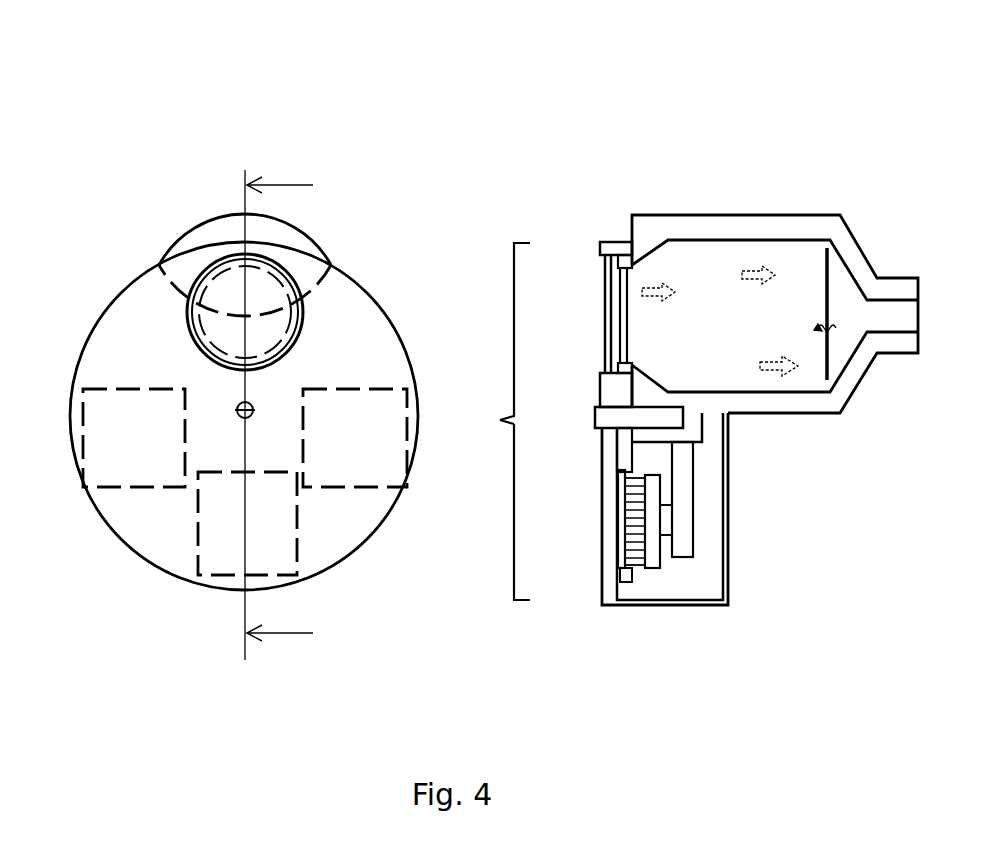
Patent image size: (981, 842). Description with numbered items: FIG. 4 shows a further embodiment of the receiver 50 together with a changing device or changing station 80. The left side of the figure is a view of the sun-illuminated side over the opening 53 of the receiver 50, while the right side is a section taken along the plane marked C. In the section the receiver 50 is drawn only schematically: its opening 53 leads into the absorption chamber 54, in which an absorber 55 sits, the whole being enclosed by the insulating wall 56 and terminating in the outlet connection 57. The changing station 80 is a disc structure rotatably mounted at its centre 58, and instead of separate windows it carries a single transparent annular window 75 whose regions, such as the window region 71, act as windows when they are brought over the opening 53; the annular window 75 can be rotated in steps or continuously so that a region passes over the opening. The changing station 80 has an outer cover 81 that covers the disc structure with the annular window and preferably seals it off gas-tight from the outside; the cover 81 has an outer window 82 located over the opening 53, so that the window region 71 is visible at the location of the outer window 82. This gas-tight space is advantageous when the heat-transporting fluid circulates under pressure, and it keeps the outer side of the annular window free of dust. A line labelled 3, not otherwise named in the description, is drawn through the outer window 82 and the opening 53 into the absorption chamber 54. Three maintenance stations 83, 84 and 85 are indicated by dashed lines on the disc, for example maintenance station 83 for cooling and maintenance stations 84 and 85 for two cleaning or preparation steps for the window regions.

The axis 3 is at (561, 318).
The receiver 50 is at (192, 198).
The opening 53 is at (303, 332).
The absorption chamber 54 is at (527, 322).
The absorber 55 is at (830, 342).
The insulating wall 56 is at (733, 213).
The outlet connection 57 is at (903, 277).
The centre 58 is at (597, 421).
The window region 71 is at (285, 296).
The transparent annular window 75 is at (620, 320).
The changing station 80 is at (65, 672).
The outer cover 81 is at (111, 302).
The outer window 82 is at (305, 305).
The maintenance station 83 is at (100, 488).
The maintenance station 84 is at (198, 523).
The maintenance station 85 is at (343, 490).